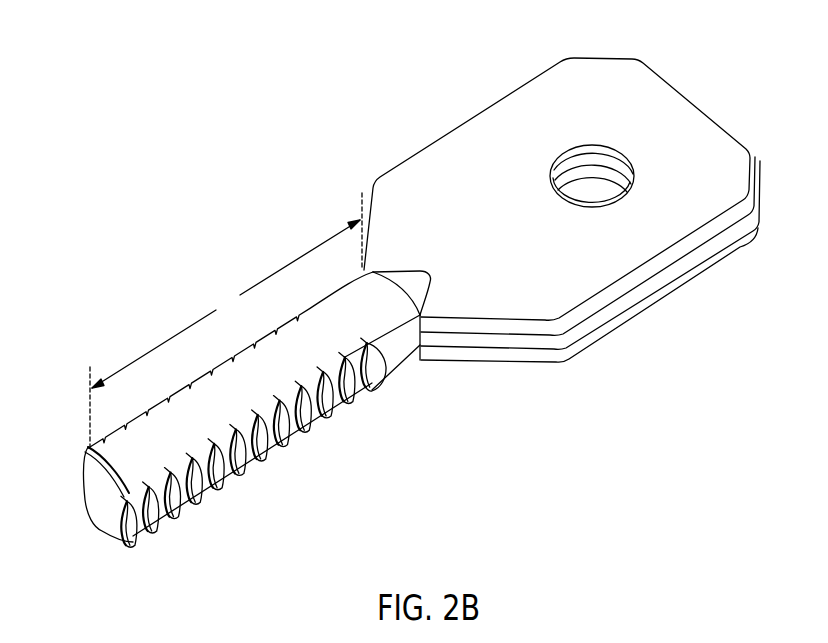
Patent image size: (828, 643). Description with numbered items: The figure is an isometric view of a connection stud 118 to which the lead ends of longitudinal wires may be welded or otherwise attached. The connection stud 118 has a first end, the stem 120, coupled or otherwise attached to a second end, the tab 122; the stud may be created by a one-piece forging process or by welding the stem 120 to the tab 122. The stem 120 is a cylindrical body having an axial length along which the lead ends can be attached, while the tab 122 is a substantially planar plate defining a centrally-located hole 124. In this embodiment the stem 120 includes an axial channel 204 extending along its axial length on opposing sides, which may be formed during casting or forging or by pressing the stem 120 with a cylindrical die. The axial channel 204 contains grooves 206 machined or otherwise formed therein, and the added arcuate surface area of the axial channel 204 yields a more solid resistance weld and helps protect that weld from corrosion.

The connection stud 118 is at (267, 153).
The stem 120 is at (148, 423).
The tab 122 is at (690, 120).
The hole 124 is at (587, 163).
The axial channel 204 is at (84, 479).
The grooves 206 is at (295, 450).